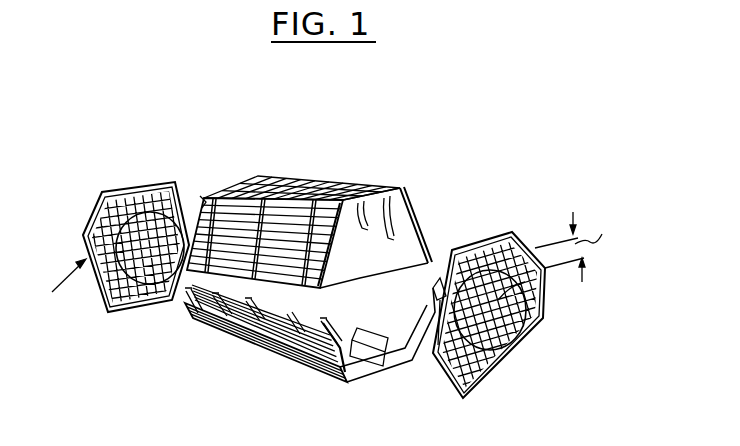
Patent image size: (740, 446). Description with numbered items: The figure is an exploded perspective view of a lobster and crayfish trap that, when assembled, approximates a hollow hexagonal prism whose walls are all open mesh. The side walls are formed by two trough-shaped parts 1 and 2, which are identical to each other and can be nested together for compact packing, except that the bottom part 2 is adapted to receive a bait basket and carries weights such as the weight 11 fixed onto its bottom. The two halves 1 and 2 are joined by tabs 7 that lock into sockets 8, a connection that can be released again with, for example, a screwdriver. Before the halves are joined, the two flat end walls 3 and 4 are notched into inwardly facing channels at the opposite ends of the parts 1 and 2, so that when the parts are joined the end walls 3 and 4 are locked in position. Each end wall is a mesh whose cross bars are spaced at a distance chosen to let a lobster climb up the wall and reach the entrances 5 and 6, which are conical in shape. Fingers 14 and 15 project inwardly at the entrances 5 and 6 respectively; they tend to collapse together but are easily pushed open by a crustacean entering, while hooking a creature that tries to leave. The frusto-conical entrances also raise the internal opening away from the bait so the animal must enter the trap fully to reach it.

The side wall part 1 is at (408, 214).
The bottom side wall part 2 is at (372, 372).
The end wall 3 is at (508, 232).
The end wall 4 is at (118, 194).
The entrance 5 is at (520, 327).
The entrance 6 is at (63, 288).
The tab 7 is at (400, 256).
The socket 8 is at (360, 268).
The weight 11 is at (343, 382).
The fingers 14 is at (436, 345).
The fingers 15 is at (200, 210).